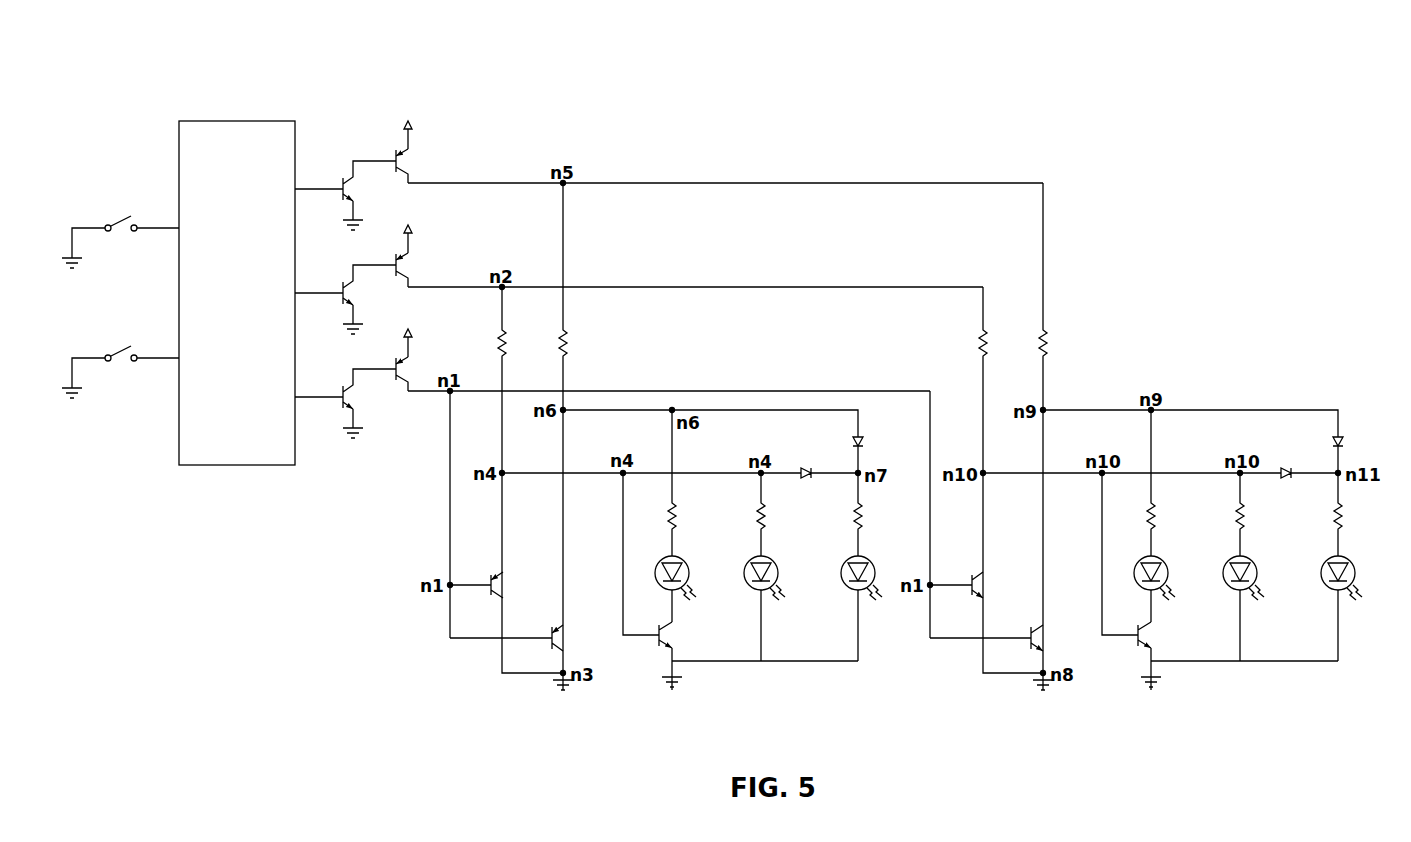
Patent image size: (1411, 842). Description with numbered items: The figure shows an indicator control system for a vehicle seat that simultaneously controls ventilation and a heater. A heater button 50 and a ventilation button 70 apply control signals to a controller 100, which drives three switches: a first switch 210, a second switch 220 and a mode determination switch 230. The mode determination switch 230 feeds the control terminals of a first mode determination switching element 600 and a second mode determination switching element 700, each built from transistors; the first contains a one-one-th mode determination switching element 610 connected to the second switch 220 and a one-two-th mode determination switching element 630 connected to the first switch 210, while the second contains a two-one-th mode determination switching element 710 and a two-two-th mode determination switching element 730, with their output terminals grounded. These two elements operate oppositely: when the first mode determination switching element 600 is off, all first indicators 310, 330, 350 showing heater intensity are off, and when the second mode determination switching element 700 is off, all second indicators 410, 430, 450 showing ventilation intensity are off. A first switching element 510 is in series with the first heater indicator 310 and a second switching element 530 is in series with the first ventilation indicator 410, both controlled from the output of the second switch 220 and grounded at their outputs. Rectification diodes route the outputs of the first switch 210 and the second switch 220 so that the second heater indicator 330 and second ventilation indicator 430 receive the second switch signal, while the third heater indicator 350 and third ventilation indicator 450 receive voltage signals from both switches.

The heater button 50 is at (112, 203).
The ventilation button 70 is at (112, 333).
The controller 100 is at (245, 466).
The first switch 210 is at (343, 157).
The second switch 220 is at (361, 269).
The mode determination switch 230 is at (361, 373).
The (1-1)-th indicator 310 is at (687, 550).
The (1-2)-th indicator 330 is at (776, 550).
The (1-3)-th indicator 350 is at (874, 550).
The (2-1)-th indicator 410 is at (1167, 550).
The (2-2)-th indicator 430 is at (1255, 550).
The (2-3)-th indicator 450 is at (1353, 550).
The first switching element 510 is at (636, 660).
The second switching element 530 is at (1116, 660).
The first mode determination switching element 600 is at (501, 661).
The (1-1)-th mode determination switching element 610 is at (478, 616).
The (1-2)-th mode determination switching element 630 is at (526, 662).
The second mode determination switching element 700 is at (981, 660).
The (2-1)-th mode determination switching element 710 is at (958, 616).
The (2-2)-th mode determination switching element 730 is at (1006, 662).